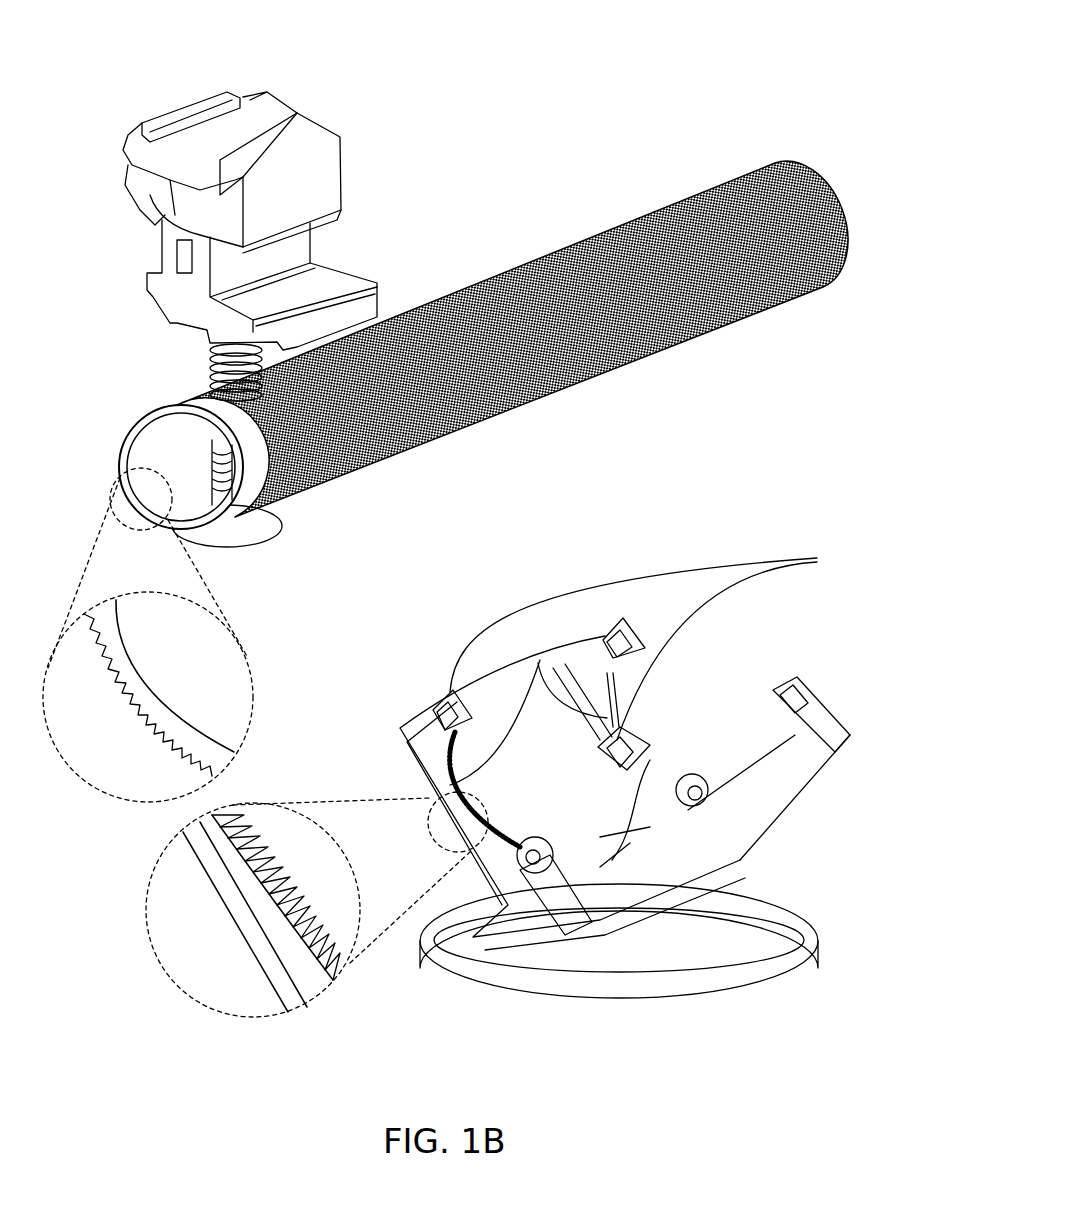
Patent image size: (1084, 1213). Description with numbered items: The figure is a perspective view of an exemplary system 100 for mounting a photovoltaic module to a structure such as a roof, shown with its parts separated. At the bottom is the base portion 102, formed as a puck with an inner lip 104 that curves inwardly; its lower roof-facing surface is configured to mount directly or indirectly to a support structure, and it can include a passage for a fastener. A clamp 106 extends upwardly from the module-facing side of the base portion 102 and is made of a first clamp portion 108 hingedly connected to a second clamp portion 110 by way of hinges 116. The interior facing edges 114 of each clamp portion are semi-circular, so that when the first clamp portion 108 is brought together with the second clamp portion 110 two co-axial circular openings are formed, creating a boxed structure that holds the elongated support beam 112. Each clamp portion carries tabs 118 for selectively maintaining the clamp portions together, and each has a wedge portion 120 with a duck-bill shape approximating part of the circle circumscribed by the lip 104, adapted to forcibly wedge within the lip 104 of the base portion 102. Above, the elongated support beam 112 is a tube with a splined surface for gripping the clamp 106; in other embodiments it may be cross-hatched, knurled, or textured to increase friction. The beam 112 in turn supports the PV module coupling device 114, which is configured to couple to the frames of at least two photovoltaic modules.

The system 100 is at (517, 28).
The base portion 102 is at (627, 956).
The inner lip 104 is at (767, 905).
The clamp 106 is at (598, 799).
The first clamp portion 108 is at (408, 760).
The second clamp portion 110 is at (780, 802).
The elongated support beam 112 is at (748, 168).
The PV module coupling device 114 is at (370, 146).
The hinges 116 is at (698, 777).
The tabs 118 is at (788, 683).
The wedge portion 120 is at (725, 905).